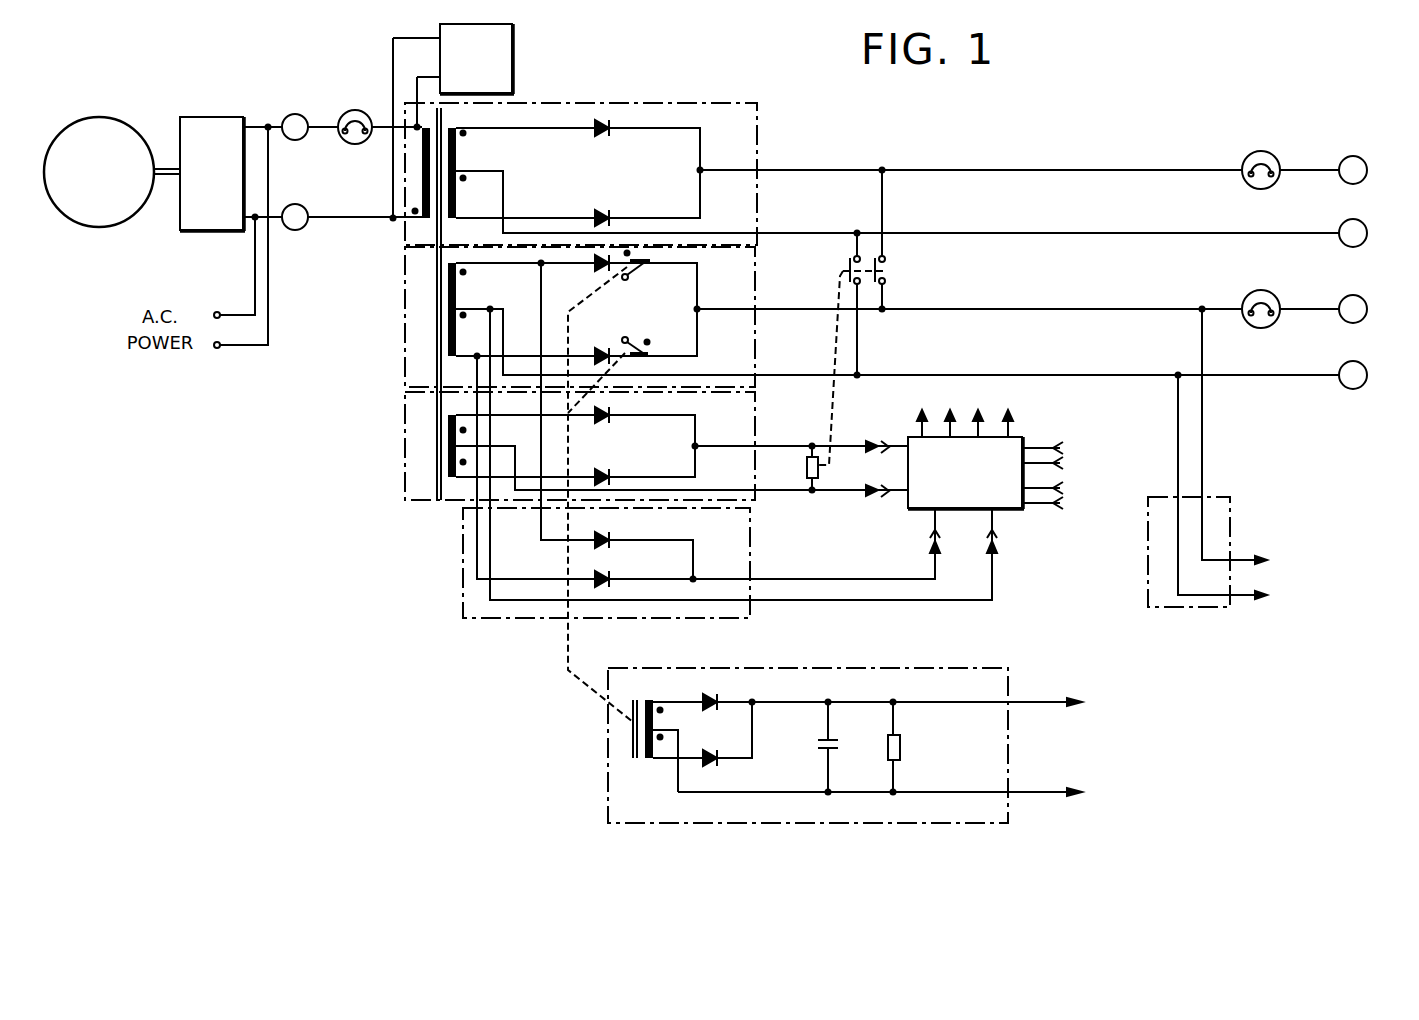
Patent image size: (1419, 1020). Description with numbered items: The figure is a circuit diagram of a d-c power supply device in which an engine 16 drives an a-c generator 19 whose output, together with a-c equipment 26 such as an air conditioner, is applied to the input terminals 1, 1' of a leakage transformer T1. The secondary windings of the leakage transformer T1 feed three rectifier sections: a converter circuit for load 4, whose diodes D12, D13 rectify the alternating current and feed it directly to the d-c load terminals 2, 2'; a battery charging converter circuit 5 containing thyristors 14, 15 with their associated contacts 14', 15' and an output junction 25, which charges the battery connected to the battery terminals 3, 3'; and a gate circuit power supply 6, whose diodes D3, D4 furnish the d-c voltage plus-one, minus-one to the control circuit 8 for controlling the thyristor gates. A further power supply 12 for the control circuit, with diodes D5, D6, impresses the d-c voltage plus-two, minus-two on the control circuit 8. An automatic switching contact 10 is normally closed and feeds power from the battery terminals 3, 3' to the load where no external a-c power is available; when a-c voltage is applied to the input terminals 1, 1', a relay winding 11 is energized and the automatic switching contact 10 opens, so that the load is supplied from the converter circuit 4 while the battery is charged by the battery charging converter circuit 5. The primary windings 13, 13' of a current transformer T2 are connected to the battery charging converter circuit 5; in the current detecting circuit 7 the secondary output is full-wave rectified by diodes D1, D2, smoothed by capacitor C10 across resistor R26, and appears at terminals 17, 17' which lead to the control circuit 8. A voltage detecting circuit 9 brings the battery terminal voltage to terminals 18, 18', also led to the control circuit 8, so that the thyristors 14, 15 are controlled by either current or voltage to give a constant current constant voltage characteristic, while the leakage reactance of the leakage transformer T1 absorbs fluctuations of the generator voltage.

The input terminal 1 is at (295, 104).
The input terminal 1' is at (295, 239).
The d-c load terminal 2 is at (1323, 170).
The d-c load terminal 2' is at (1376, 233).
The battery terminal 3 is at (1323, 309).
The battery terminal 3' is at (1376, 375).
The converter circuit for load 4 is at (606, 100).
The battery charging converter circuit 5 is at (405, 318).
The gate circuit power supply 6 is at (405, 444).
The current detecting circuit 7 is at (820, 826).
The control circuit 8 is at (1022, 436).
The voltage detecting circuit 9 is at (1233, 503).
The automatic switching contact 10 is at (885, 262).
The relay winding 11 is at (807, 469).
The power supply for the control circuit 12 is at (462, 541).
The primary winding 13 is at (651, 465).
The primary winding 13' is at (634, 366).
The thyristor 14 is at (577, 273).
The contact 14' is at (779, 330).
The thyristor 15 is at (595, 331).
The contact 15' is at (806, 350).
The engine 16 is at (107, 117).
The terminal 17 is at (951, 572).
The terminal 17' is at (918, 631).
The terminal 18 is at (1164, 441).
The terminal 18' is at (1168, 491).
The a-c generator 19 is at (212, 117).
The output junction 25 is at (697, 308).
The a-c equipment 26 is at (513, 51).
The leakage transformer T1 is at (437, 480).
The current transformer T2 is at (633, 760).
The diode D1 is at (717, 706).
The diode D2 is at (717, 762).
The diode D3 is at (606, 421).
The diode D4 is at (617, 476).
The diode D5 is at (612, 538).
The diode D6 is at (612, 578).
The diode D12 is at (604, 133).
The diode D13 is at (598, 216).
The capacitor C10 is at (817, 745).
The resistor R26 is at (905, 749).